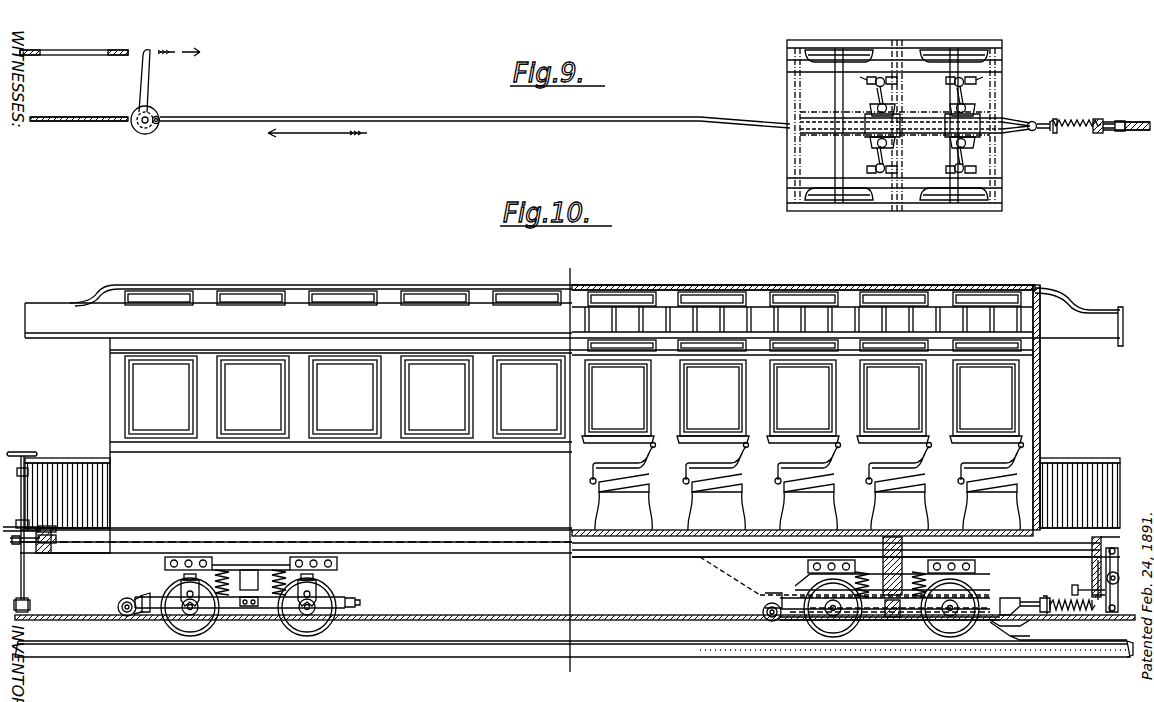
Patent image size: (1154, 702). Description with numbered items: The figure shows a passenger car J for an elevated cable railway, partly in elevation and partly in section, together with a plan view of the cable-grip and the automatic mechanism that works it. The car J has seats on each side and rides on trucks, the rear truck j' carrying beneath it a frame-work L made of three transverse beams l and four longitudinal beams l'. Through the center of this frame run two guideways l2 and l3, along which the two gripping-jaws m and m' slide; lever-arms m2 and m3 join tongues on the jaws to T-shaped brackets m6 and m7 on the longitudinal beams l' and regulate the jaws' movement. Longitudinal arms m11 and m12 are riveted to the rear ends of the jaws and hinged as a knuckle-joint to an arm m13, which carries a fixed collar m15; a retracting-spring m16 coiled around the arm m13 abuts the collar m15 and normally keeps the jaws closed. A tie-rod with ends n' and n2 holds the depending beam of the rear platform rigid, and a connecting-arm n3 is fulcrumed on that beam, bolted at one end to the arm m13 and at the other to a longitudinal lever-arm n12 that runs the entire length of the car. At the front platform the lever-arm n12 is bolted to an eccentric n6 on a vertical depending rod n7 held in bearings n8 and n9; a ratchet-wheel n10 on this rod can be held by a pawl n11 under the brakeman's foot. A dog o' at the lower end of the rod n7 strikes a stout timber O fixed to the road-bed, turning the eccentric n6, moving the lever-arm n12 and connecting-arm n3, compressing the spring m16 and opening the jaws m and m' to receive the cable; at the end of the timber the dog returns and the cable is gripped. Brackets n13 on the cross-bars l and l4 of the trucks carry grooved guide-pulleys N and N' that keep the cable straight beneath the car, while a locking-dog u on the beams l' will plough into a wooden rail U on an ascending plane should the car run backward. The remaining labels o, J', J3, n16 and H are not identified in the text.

In FIG. 9, the stationary bar o is at (74, 65).
In FIG. 9, the dog o' is at (169, 80).
In FIG. 9, the eccentric n6 is at (140, 133).
In FIG. 9, the longitudinal lever-arm n12 is at (497, 122).
In FIG. 10, the longitudinal lever-arm n12 is at (622, 558).
In FIG. 9, the longitudinal beams l' is at (894, 125).
In FIG. 10, the longitudinal beams l' is at (885, 626).
In FIG. 9, the longitudinal guideway l2 is at (803, 110).
In FIG. 10, the longitudinal guideway l2 is at (780, 640).
In FIG. 9, the longitudinal guideway l3 is at (800, 144).
In FIG. 9, the transverse beams l is at (895, 125).
In FIG. 10, the transverse beams l is at (897, 592).
In FIG. 9, the gripping-jaw m is at (901, 112).
In FIG. 10, the gripping-jaw m is at (885, 612).
In FIG. 9, the gripping-jaw m' is at (922, 133).
In FIG. 9, the lever-arm m2 is at (878, 97).
In FIG. 10, the lever-arm m2 is at (1120, 588).
In FIG. 9, the lever-arm m3 is at (876, 146).
In FIG. 9, the T-shaped bracket m6 is at (866, 81).
In FIG. 9, the T-shaped bracket m7 is at (871, 165).
In FIG. 9, the longitudinal arm m11 is at (1025, 120).
In FIG. 10, the longitudinal arm m11 is at (1012, 622).
In FIG. 9, the longitudinal arm m12 is at (1028, 131).
In FIG. 10, the longitudinal arm m12 is at (1095, 572).
In FIG. 9, the fixed collar m15 is at (1064, 120).
In FIG. 10, the fixed collar m15 is at (1058, 598).
In FIG. 9, the retracting-spring m16 is at (1092, 132).
In FIG. 9, the connecting-arm n3 is at (1120, 120).
In FIG. 10, the connecting-arm n3 is at (1120, 562).
In FIG. 10, the passenger car J is at (574, 421).
In FIG. 10, the sill beam J' is at (296, 584).
In FIG. 10, the platform railing J3 is at (62, 524).
In FIG. 10, the vertical depending rod n7 is at (20, 484).
In FIG. 10, the bearing n9 is at (17, 470).
In FIG. 10, the bearing n8 is at (16, 521).
In FIG. 10, the ratchet-wheel n10 is at (8, 527).
In FIG. 10, the cross bar n16 is at (14, 540).
In FIG. 10, the pawl n11 is at (44, 527).
In FIG. 10, the longitudinal timber O is at (31, 603).
In FIG. 10, the track rail H is at (530, 614).
In FIG. 10, the wooden plain-surfaced rail U is at (1052, 660).
In FIG. 10, the locking-dog u is at (983, 658).
In FIG. 10, the cross-timber bar l4 is at (146, 596).
In FIG. 10, the grooved guide-pulley N is at (120, 605).
In FIG. 10, the bracket n13 is at (138, 598).
In FIG. 10, the frame-work L is at (770, 596).
In FIG. 10, the rear truck j' is at (879, 579).
In FIG. 10, the grooved guide-pulley N' is at (761, 608).
In FIG. 10, the tie-rod end n2 is at (1012, 598).
In FIG. 10, the tie-rod end n' is at (1082, 584).
In FIG. 10, the arm with U-shaped extremity m13 is at (1100, 623).